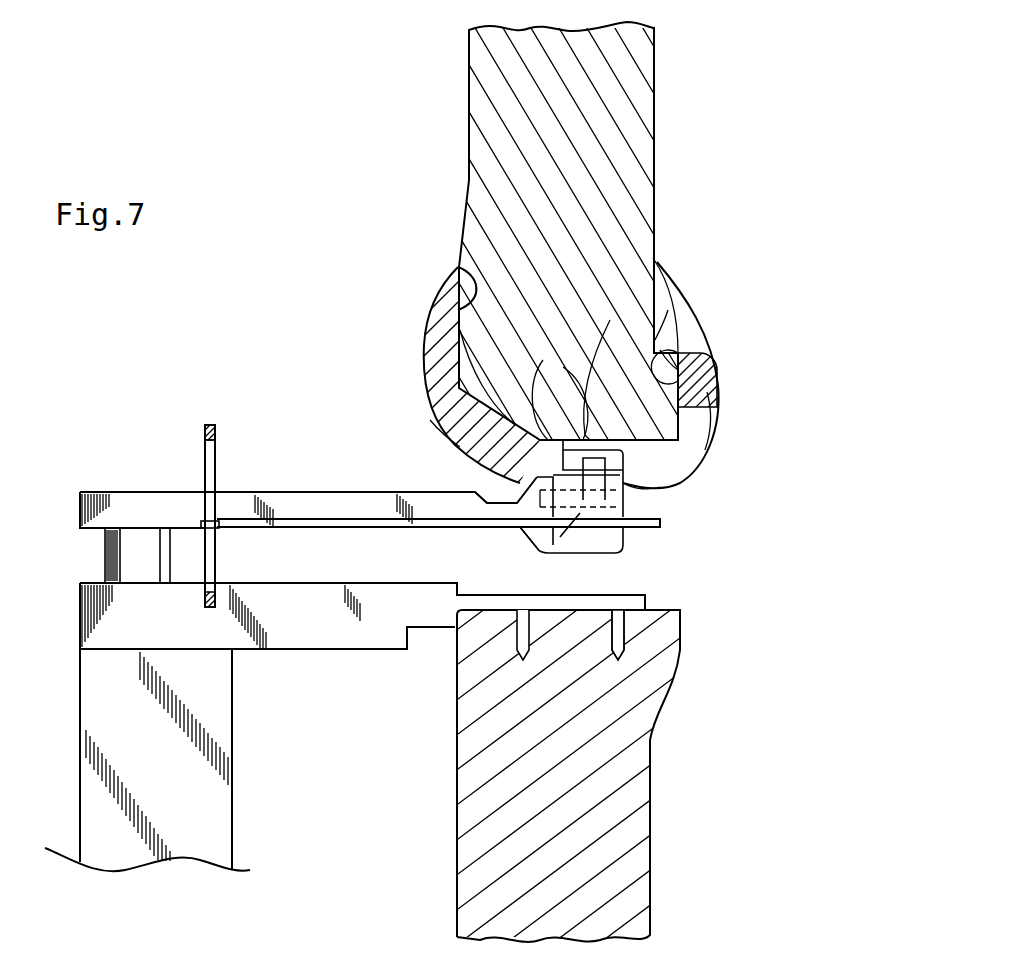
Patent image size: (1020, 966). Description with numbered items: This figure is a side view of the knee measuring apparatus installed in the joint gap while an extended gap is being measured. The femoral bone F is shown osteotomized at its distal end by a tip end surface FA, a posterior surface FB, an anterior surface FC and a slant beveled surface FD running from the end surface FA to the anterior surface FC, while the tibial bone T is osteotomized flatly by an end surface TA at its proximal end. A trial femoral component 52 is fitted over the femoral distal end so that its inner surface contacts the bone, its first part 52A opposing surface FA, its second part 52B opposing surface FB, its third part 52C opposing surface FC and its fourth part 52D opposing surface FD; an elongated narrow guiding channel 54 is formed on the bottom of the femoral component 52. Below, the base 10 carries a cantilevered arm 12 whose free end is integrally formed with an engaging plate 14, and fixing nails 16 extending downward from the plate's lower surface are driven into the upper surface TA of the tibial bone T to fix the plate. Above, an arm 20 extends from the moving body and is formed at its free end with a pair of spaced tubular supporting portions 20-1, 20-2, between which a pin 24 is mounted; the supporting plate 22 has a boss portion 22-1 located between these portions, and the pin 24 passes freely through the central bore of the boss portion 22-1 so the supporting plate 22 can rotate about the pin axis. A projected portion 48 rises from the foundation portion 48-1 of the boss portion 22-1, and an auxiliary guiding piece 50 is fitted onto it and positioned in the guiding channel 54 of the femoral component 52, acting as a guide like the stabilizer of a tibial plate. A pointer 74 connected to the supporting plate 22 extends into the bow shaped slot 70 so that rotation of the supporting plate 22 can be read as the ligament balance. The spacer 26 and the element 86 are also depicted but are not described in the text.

The femoral bone F is at (617, 140).
The tip osteotomized surface FA is at (610, 320).
The posterior osteotomized surface FB is at (707, 392).
The anterior osteotomized surface FC is at (457, 353).
The anterior beveled surface FD is at (447, 430).
The tibial bone T is at (632, 832).
The end surface TA is at (612, 596).
The base 10 is at (188, 755).
The arm 12 is at (318, 633).
The engaging plate 14 is at (570, 598).
The fixing nails 16 is at (622, 605).
The arm 20 is at (290, 500).
The tubular supporting portion 20-1 is at (660, 487).
The tubular supporting portion 20-2 is at (490, 487).
The supporting plate 22 is at (647, 527).
The boss portion 22-1 is at (537, 548).
The pin 24 is at (627, 463).
The spacer 26 is at (103, 555).
The projected portion 48 is at (600, 442).
The foundation portion 48-1 is at (613, 493).
The auxiliary guiding piece 50 is at (520, 480).
The femoral component 52 is at (386, 333).
The first part 52A is at (655, 340).
The second part 52B is at (660, 350).
The third part 52C is at (458, 267).
The fourth part 52D is at (560, 384).
The guiding channel 54 is at (717, 368).
The bow shaped slot 70 is at (205, 462).
The pointer 74 is at (203, 522).
The pin head 86 is at (207, 430).